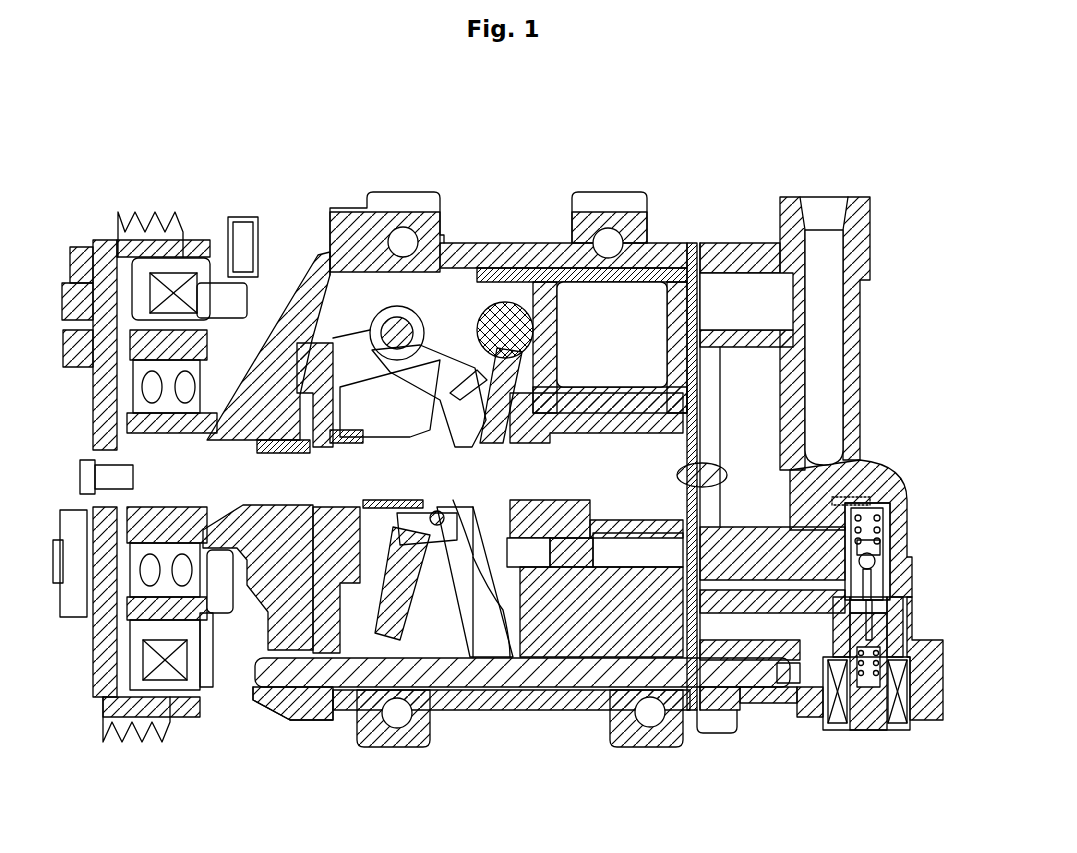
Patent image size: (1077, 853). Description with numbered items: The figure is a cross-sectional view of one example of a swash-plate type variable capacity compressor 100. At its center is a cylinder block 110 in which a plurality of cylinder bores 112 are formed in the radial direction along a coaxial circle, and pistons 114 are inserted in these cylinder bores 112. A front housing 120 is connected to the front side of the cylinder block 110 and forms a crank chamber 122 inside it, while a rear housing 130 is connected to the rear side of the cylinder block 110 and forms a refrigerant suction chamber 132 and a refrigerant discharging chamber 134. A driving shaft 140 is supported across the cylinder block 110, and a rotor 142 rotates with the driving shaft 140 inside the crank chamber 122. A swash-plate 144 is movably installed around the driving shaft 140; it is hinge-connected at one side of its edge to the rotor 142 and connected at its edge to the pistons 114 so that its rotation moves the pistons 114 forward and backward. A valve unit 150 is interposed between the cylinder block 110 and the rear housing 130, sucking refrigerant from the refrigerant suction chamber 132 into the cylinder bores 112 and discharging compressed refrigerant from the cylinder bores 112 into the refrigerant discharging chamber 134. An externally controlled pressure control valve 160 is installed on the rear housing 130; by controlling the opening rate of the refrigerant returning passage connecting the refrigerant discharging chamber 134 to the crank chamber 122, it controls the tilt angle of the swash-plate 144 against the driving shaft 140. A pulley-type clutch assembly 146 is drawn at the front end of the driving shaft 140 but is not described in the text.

The swash-plate type variable capacity compressor 100 is at (300, 172).
The cylinder block 110 is at (668, 235).
The cylinder bore 112 is at (600, 292).
The piston 114 is at (553, 283).
The front housing 120 is at (316, 252).
The crank chamber 122 is at (373, 285).
The rear housing 130 is at (599, 508).
The refrigerant suction chamber 132 is at (755, 313).
The refrigerant discharging chamber 134 is at (780, 412).
The driving shaft 140 is at (512, 657).
The rotor 142 is at (357, 662).
The swash-plate 144 is at (407, 603).
The pulley / electromagnetic clutch 146 is at (167, 277).
The valve unit 150 is at (723, 290).
The externally controlled pressure control valve 160 is at (862, 735).